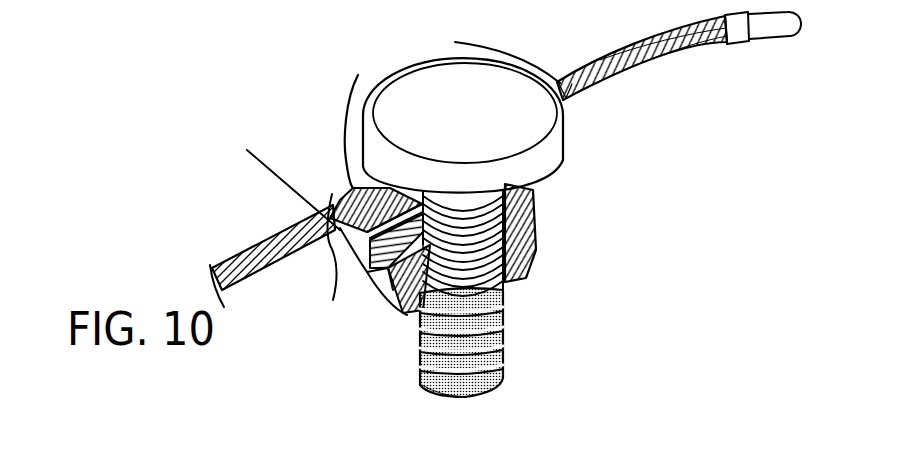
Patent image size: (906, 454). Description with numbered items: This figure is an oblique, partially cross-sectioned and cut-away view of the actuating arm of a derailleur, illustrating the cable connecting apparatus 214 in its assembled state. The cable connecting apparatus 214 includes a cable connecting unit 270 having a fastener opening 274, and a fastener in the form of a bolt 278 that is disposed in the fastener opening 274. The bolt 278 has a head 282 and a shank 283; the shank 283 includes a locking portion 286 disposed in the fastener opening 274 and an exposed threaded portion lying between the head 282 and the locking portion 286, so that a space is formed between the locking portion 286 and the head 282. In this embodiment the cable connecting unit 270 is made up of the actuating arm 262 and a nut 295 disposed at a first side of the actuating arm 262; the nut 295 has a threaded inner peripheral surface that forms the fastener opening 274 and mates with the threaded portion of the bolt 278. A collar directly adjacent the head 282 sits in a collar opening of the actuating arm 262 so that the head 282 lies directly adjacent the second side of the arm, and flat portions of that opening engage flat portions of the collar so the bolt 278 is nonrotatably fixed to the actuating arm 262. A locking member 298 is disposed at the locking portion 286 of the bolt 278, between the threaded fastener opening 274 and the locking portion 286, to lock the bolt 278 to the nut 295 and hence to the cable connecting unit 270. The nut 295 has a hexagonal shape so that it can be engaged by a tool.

The cable connecting apparatus 214 is at (215, 130).
The actuating arm 262 is at (298, 162).
The cable connecting unit 270 is at (382, 320).
The fastener opening 274 is at (410, 313).
The bolt 278 is at (580, 142).
The head 282 is at (512, 95).
The shank 283 is at (515, 355).
The locking portion 286 is at (497, 325).
The nut 295 is at (520, 208).
The locking member 298 is at (443, 373).